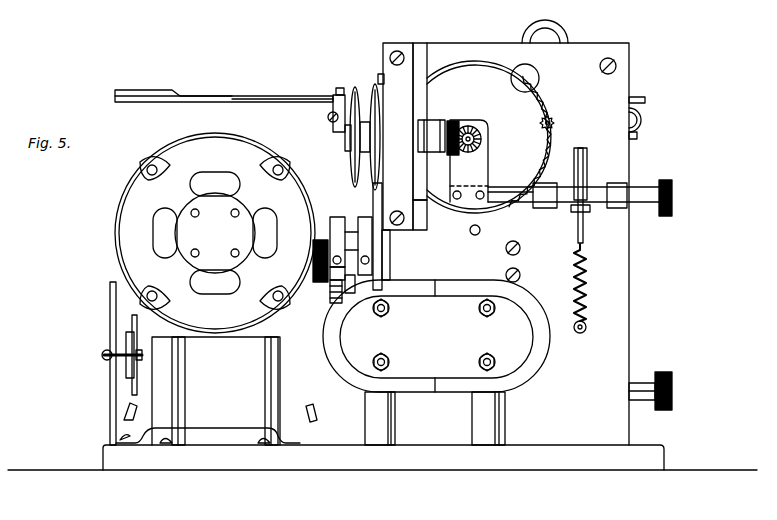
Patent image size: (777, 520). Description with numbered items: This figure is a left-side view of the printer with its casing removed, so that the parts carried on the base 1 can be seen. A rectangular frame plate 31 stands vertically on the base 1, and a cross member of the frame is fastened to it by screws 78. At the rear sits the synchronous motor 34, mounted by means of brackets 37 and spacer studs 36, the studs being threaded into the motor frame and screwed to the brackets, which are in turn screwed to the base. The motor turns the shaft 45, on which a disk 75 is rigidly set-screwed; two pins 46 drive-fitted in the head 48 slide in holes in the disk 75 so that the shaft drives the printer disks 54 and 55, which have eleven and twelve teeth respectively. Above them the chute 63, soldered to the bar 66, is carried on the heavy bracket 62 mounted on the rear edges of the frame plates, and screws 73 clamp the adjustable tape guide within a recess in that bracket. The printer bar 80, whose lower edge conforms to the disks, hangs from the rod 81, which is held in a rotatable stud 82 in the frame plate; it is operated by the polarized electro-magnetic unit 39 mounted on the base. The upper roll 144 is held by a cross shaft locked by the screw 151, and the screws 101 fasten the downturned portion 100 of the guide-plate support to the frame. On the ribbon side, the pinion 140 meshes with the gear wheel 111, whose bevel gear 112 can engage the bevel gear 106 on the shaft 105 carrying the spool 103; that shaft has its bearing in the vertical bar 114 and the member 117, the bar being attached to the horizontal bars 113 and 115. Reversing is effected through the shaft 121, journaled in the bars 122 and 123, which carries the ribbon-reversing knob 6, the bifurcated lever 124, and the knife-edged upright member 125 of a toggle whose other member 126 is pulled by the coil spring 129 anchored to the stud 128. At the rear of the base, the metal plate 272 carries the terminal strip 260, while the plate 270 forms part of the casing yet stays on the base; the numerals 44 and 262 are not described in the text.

The base 1 is at (552, 446).
The ribbon-reversing knob 6 is at (673, 200).
The rectangular plate 31 is at (630, 308).
The motor 34 is at (132, 190).
The spacer studs 36 is at (270, 378).
The brackets 37 is at (206, 426).
The polarized electro-magnetic unit 39 is at (512, 362).
The knurled knob 44 is at (318, 283).
The shaft 45 is at (351, 294).
The pins 46 is at (348, 226).
The head 48 is at (365, 225).
The printer disk 54 is at (382, 248).
The printer disk 55 is at (391, 272).
The bracket 62 is at (338, 96).
The chute 63 is at (148, 92).
The bar 66 is at (258, 97).
The screws 73 is at (328, 118).
The disk 75 is at (332, 304).
The screws 78 is at (521, 274).
The printer bar 80 is at (372, 84).
The rod 81 is at (380, 72).
The stud 82 is at (538, 83).
The downturned portion 100 is at (640, 137).
The screws 101 is at (642, 120).
The spool 103 is at (352, 92).
The shaft 105 is at (336, 92).
The bevel gear 106 is at (455, 122).
The gear wheel 111 is at (460, 70).
The bevel gear 112 is at (476, 126).
The horizontal bar 113 is at (422, 44).
The vertical rectangular bar 114 is at (404, 44).
The horizontal bar 115 is at (424, 218).
The member 117 is at (430, 120).
The shaft 121 is at (518, 203).
The horizontal rectangular bar 122 is at (541, 209).
The horizontal rectangular bar 123 is at (628, 210).
The bifurcated lever 124 is at (489, 158).
The upright member 125 is at (586, 172).
The toggle member 126 is at (584, 228).
The stud 128 is at (584, 332).
The coil spring 129 is at (588, 266).
The pinion 140 is at (556, 124).
The upper roll 144 is at (553, 38).
The screw 151 is at (618, 68).
The terminal strip 260 is at (126, 338).
The bolt 262 is at (104, 360).
The plate 270 is at (132, 318).
The metal plate 272 is at (110, 284).